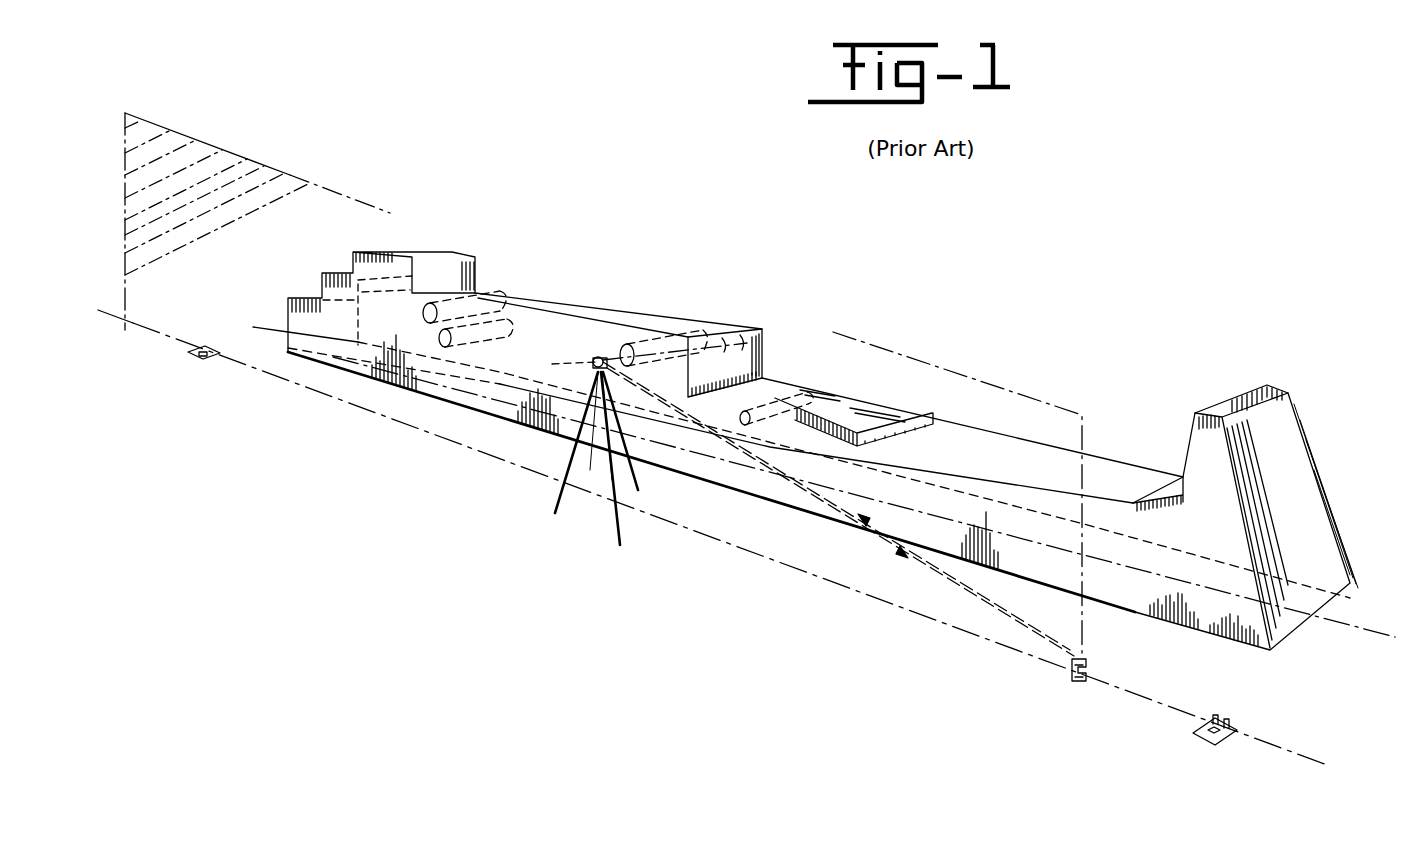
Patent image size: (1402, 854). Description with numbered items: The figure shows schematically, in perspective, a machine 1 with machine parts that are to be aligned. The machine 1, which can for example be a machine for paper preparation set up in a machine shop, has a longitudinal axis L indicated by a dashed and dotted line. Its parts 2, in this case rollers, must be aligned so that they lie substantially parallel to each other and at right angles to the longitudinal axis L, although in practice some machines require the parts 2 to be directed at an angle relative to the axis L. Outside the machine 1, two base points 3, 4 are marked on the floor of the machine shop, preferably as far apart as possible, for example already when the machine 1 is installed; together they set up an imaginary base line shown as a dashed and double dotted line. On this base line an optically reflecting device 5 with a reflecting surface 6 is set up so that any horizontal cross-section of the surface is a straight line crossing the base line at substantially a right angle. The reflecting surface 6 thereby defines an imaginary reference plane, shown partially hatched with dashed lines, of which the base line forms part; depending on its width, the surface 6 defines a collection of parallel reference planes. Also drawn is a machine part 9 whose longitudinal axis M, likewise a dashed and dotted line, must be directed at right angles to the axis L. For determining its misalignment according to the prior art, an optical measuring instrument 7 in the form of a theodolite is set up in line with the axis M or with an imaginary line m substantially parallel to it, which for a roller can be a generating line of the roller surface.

The machine 1 is at (1247, 386).
The parts 2 is at (513, 302).
The base point 3 is at (1200, 731).
The base point 4 is at (204, 360).
The optically reflecting device 5 is at (1076, 684).
The reflecting surface 6 is at (1062, 651).
The optical measuring instrument 7 is at (588, 508).
The machine part 9 is at (640, 342).
The imaginary line m is at (738, 330).
The longitudinal axis of the machine part M is at (787, 330).
The longitudinal axis of the machine L is at (1368, 626).